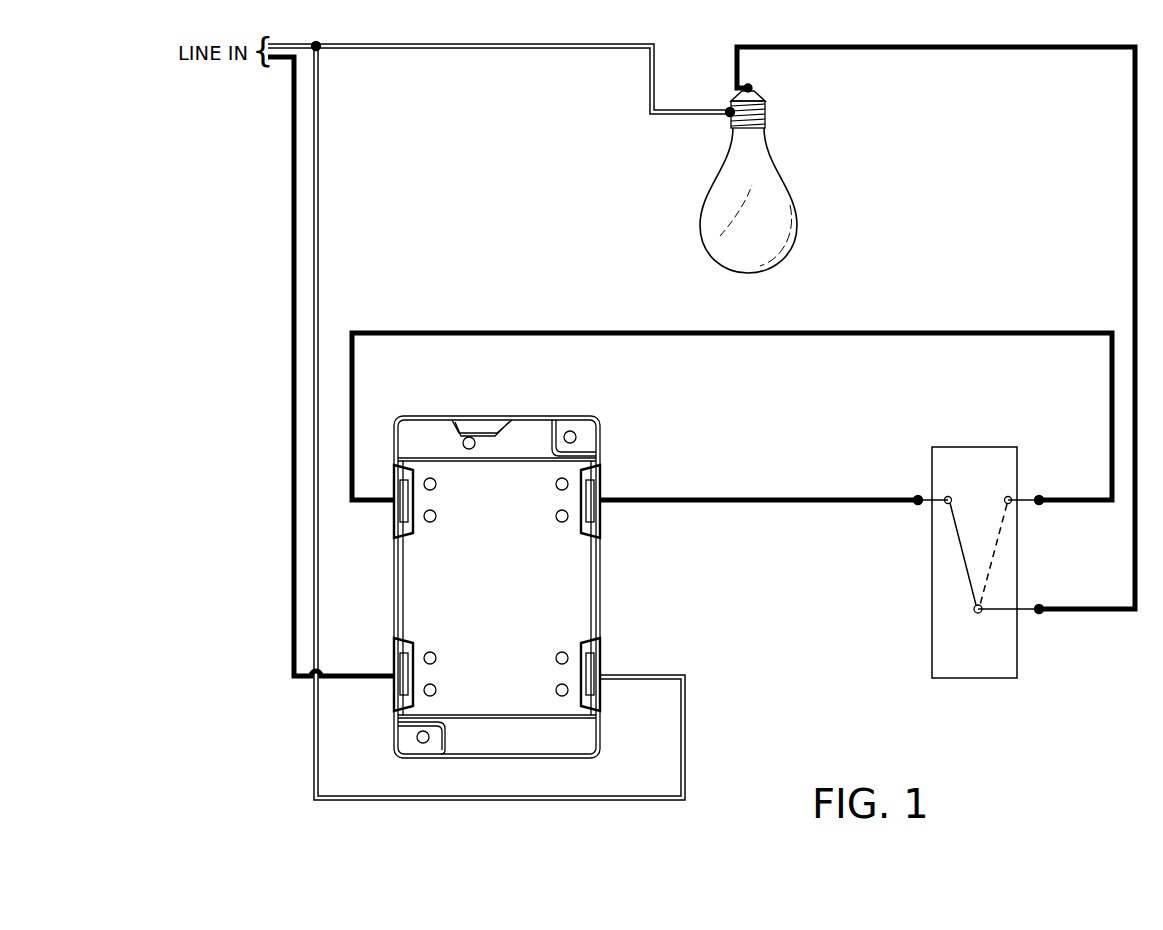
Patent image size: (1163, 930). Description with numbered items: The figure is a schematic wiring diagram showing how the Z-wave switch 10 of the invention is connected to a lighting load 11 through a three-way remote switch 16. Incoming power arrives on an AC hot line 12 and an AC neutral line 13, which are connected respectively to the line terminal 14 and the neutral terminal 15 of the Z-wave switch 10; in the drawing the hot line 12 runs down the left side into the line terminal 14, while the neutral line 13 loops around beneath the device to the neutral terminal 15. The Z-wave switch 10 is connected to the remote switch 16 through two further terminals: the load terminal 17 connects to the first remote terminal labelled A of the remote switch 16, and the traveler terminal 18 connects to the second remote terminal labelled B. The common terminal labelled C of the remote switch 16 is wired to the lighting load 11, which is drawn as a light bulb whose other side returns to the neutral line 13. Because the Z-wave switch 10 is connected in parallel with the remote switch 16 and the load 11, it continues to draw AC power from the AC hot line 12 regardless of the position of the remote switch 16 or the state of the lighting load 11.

The Z-wave switch 10 is at (620, 421).
The lighting load 11 is at (804, 178).
The AC hot line 12 is at (288, 181).
The AC neutral line 13 is at (326, 187).
The line terminal 14 is at (389, 670).
The neutral terminal 15 is at (606, 671).
The three-way remote switch 16 is at (1006, 692).
The load terminal 17 is at (391, 510).
The traveler terminal 18 is at (606, 496).